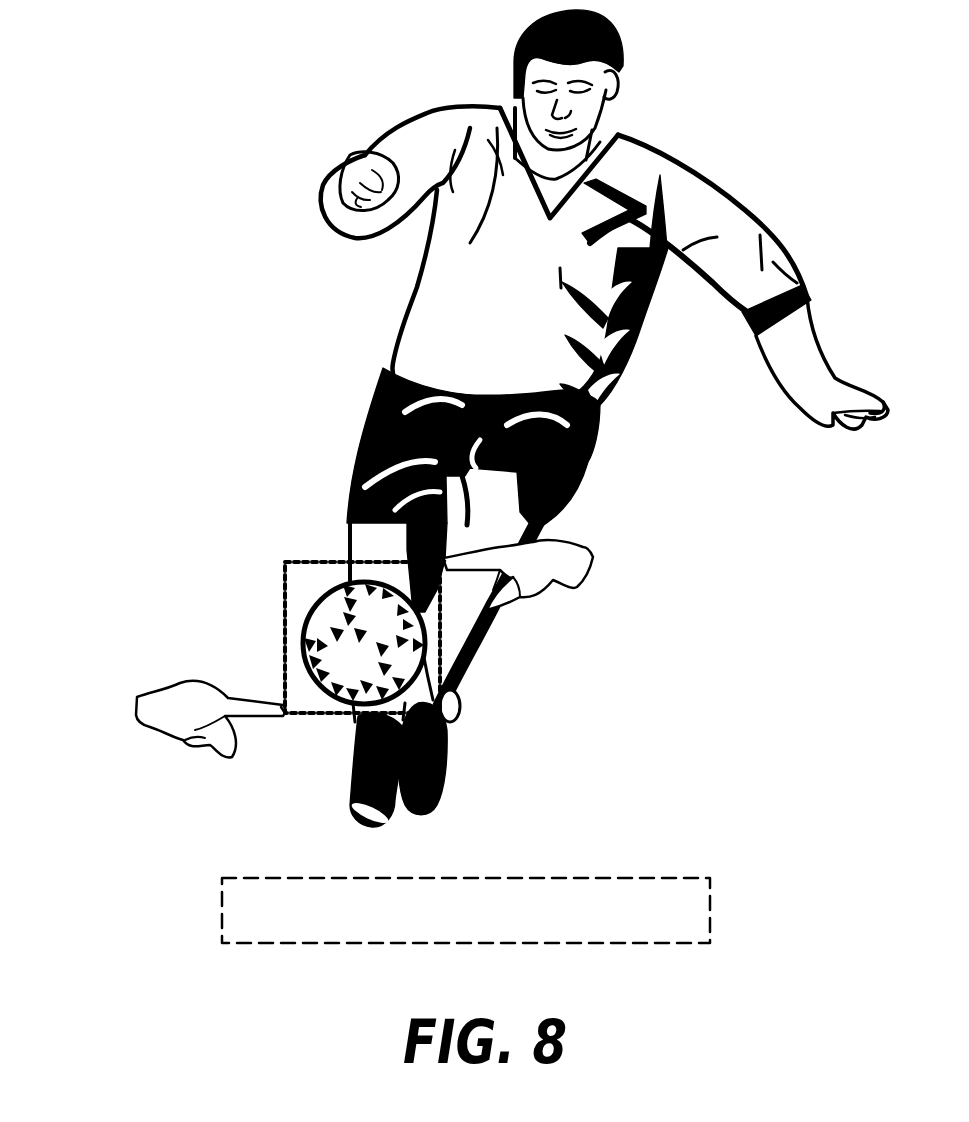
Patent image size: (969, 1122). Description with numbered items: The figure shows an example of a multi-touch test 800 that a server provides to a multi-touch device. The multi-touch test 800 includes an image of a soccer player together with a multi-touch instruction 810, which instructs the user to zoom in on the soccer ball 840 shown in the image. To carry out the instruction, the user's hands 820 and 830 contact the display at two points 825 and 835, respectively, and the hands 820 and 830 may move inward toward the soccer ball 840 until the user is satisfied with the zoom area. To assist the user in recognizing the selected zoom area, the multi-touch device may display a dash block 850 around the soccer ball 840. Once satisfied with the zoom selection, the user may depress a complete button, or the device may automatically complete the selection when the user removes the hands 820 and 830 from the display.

The multi-touch test 800 is at (183, 100).
The multi-touch instruction 810 is at (242, 945).
The user's hand 820 is at (140, 695).
The contact point 825 is at (283, 711).
The user's hand 830 is at (593, 563).
The contact point 835 is at (443, 559).
The soccer ball 840 is at (327, 590).
The dash block 850 is at (284, 581).